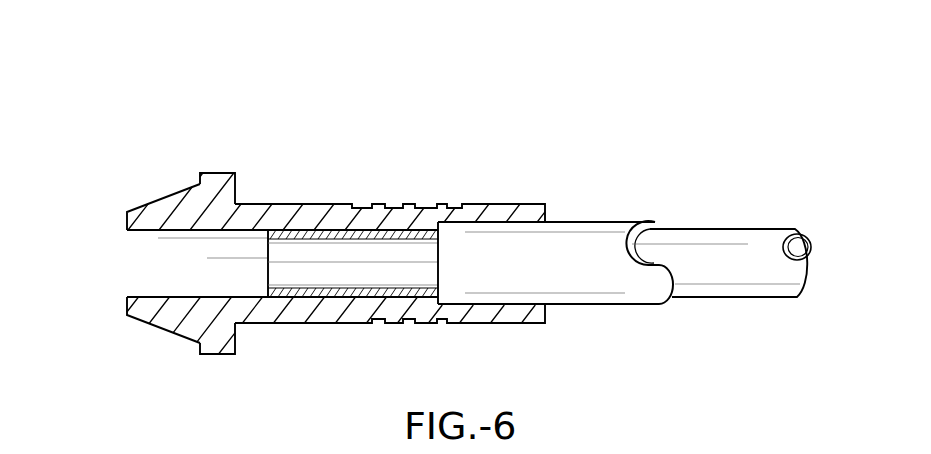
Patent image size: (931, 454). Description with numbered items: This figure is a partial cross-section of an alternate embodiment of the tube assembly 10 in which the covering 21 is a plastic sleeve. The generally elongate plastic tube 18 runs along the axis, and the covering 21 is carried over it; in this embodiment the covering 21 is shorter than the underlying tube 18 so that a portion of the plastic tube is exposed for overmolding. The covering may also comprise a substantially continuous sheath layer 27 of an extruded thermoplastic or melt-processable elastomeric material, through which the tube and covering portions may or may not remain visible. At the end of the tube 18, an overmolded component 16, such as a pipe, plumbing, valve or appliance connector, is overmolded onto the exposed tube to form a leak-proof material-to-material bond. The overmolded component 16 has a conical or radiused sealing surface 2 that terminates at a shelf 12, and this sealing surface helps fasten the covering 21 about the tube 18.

The tube assembly 10 is at (558, 143).
The conical or radiused sealing surface 2 is at (167, 197).
The shelf 12 is at (217, 173).
The overmolded component 16 is at (290, 204).
The substantially continuous sheath layer 27 is at (578, 221).
The covering 21 is at (713, 229).
The tube 18 is at (800, 246).